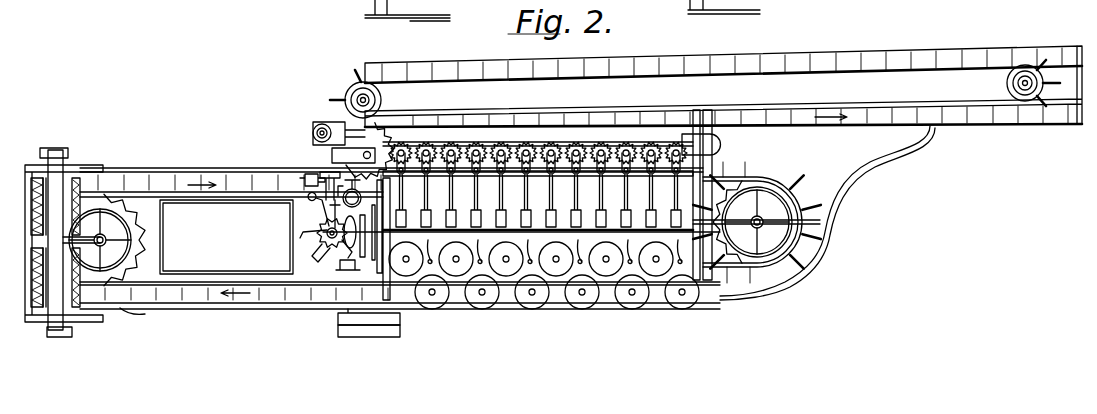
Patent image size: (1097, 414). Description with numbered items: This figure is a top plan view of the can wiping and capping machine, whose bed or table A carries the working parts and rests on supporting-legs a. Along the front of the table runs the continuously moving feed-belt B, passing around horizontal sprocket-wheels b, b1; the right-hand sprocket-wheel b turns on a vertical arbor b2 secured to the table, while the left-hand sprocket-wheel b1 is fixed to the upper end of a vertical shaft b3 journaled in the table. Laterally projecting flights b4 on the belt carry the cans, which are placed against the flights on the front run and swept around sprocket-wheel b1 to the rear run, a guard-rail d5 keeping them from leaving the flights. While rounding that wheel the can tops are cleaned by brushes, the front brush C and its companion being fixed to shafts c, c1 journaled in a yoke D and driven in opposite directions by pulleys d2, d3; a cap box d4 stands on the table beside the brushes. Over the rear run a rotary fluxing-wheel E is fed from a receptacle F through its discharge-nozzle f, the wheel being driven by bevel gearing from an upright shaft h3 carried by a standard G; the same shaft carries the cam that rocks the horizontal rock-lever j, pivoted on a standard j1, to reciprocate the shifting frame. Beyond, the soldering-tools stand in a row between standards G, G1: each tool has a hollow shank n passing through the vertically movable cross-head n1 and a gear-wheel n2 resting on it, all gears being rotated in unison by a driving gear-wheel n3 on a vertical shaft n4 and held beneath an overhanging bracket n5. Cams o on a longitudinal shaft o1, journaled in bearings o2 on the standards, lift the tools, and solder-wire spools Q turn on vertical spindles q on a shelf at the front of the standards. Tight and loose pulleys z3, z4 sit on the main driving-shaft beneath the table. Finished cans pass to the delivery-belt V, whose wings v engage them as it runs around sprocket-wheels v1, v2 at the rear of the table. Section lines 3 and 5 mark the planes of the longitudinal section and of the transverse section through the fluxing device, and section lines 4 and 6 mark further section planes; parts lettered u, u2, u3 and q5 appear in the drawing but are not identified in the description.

The supporting-leg a is at (50, 165).
The brush shaft c1 is at (32, 208).
The brush shaft c is at (60, 338).
The front brush C is at (32, 288).
The yoke D is at (56, 188).
The driving-pulley d2 is at (70, 335).
The driving-pulley d3 is at (70, 148).
The cap box d4 is at (226, 237).
The guard-rail d5 is at (147, 170).
The sprocket-wheel b is at (752, 222).
The sprocket-wheel b1 is at (107, 240).
The vertical arbor b2 is at (397, 256).
The vertical shaft b3 is at (105, 240).
The flights b4 is at (188, 182).
The feed-belt B is at (272, 285).
The section line 3 is at (310, 236).
The section line 5 is at (330, 175).
The rotary fluxing-wheel E is at (307, 177).
The flux receptacle F is at (349, 193).
The upright shaft h3 is at (318, 240).
The rock-lever j is at (324, 228).
The standard j1 is at (346, 272).
The discharge-nozzle f is at (404, 190).
The section line 4 is at (390, 222).
The section line 6 is at (415, 192).
The cam o is at (363, 250).
The longitudinal shaft o1 is at (560, 229).
The bearing o2 is at (688, 226).
The standard G is at (390, 276).
The standard G1 is at (708, 262).
The tight pulley z3 is at (340, 320).
The loose pulley z4 is at (398, 335).
The hollow shank n is at (722, 145).
The cross-head n1 is at (640, 125).
The gear-wheel n2 is at (538, 142).
The driving gear-wheel n3 is at (395, 128).
The vertical shaft n4 is at (375, 133).
The overhanging bracket n5 is at (353, 154).
The hangers u is at (522, 178).
The hanger u2 is at (476, 180).
The hanger u3 is at (598, 178).
The solder-wire spool Q is at (470, 306).
The vertical spindle q is at (555, 255).
The roller q5 is at (678, 279).
The bed or table A is at (827, 213).
The delivery-belt V is at (723, 86).
The wings v is at (862, 52).
The sprocket-wheel v1 is at (355, 88).
The sprocket-wheel v2 is at (1007, 83).